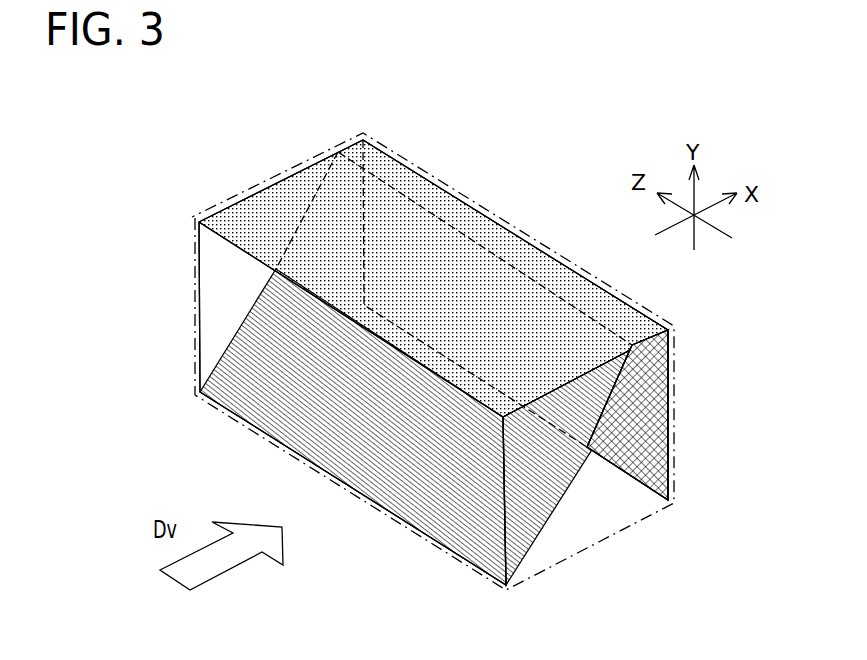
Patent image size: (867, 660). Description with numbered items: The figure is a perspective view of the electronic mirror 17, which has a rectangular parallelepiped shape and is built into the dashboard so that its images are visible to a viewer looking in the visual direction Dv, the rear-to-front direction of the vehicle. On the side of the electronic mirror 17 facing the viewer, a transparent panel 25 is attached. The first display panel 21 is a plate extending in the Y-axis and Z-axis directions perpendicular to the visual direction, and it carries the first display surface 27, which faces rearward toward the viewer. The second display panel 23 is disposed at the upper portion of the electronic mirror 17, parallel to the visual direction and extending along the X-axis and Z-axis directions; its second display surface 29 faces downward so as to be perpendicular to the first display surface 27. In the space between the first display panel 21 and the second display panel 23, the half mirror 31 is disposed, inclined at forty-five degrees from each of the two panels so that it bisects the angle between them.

The electronic mirror 17 is at (553, 153).
The first display panel 21 is at (653, 398).
The second display panel 23 is at (445, 260).
The transparent panel 25 is at (195, 291).
The first display surface 27 is at (653, 460).
The second display surface 29 is at (224, 246).
The half mirror 31 is at (540, 486).